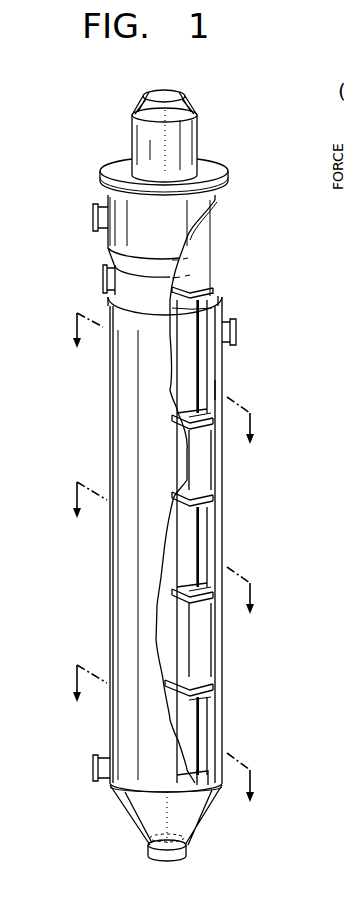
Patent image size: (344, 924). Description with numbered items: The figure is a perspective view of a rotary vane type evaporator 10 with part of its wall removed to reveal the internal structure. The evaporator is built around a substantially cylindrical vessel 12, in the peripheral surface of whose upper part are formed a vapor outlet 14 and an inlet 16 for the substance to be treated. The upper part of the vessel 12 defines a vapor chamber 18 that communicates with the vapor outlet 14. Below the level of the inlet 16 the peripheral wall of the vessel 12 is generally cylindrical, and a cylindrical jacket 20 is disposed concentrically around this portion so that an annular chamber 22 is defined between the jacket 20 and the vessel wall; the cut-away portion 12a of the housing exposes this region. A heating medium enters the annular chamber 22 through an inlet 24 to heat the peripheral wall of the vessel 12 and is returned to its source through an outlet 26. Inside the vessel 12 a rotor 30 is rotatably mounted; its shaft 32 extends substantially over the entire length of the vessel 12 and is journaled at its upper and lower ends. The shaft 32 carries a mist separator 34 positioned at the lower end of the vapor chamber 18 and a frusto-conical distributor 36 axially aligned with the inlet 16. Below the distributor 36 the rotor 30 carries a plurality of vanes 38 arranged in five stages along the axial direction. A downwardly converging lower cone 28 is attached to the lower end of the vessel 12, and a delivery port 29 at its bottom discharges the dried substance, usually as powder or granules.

The rotary vane type evaporator 10 is at (96, 118).
The vessel 12 is at (212, 213).
The housing wall section 12a is at (212, 390).
The vapor outlet 14 is at (103, 222).
The inlet 16 is at (104, 272).
The vapor chamber 18 is at (203, 230).
The cylindrical jacket 20 is at (220, 532).
The annular chamber 22 is at (220, 513).
The inlet 24 is at (231, 324).
The outlet 26 is at (110, 780).
The lower cone 28 is at (137, 820).
The delivery port 29 is at (191, 835).
The rotor 30 is at (170, 637).
The shaft 32 is at (187, 657).
The mist separator 34 is at (197, 260).
The frusto-conical distributor 36 is at (200, 287).
The vanes 38 is at (203, 373).